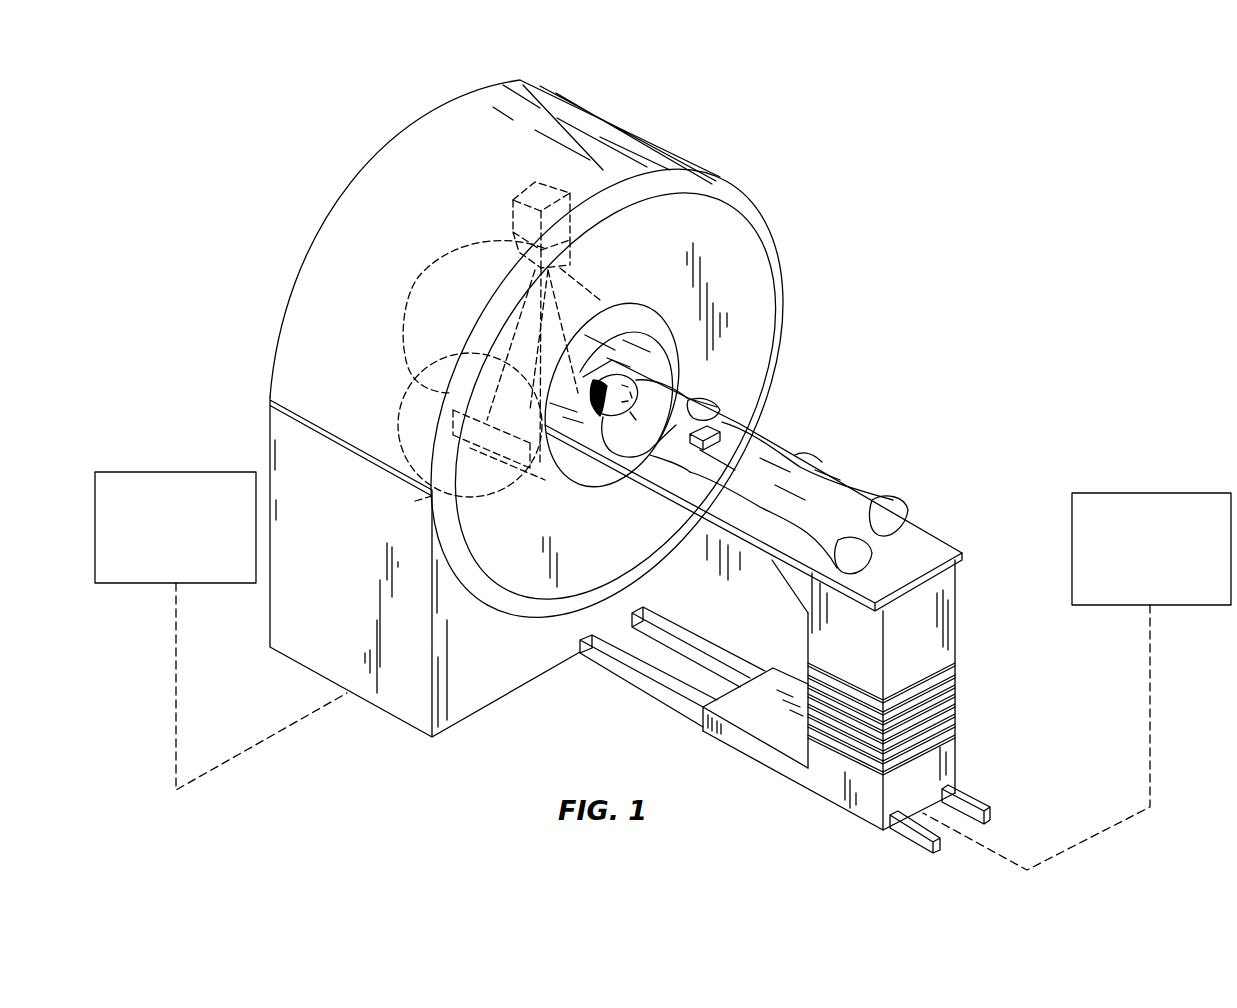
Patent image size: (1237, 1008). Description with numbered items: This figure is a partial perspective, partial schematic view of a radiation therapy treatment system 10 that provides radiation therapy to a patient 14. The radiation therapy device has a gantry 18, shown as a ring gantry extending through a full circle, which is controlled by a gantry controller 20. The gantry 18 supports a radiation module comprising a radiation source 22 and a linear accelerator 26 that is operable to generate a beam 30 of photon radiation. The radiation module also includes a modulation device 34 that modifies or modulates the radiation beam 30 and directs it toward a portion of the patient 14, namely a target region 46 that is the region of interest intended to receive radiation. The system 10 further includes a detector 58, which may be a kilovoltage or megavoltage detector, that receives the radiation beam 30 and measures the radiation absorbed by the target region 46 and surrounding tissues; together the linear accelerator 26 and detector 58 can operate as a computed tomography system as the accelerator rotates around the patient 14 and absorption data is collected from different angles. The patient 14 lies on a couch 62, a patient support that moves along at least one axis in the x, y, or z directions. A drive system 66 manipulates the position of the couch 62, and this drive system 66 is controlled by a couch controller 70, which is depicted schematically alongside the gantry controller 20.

The radiation therapy treatment system 10 is at (818, 158).
The patient 14 is at (833, 500).
The gantry 18 is at (342, 200).
The gantry controller 20 is at (143, 480).
The radiation source 22 is at (506, 201).
The linear accelerator 26 is at (518, 184).
The radiation beam 30 is at (427, 382).
The modulation device 34 is at (514, 263).
The target region 46 is at (718, 420).
The detector 58 is at (415, 501).
The couch 62 is at (925, 530).
The drive system 66 is at (937, 628).
The couch controller 70 is at (1103, 500).